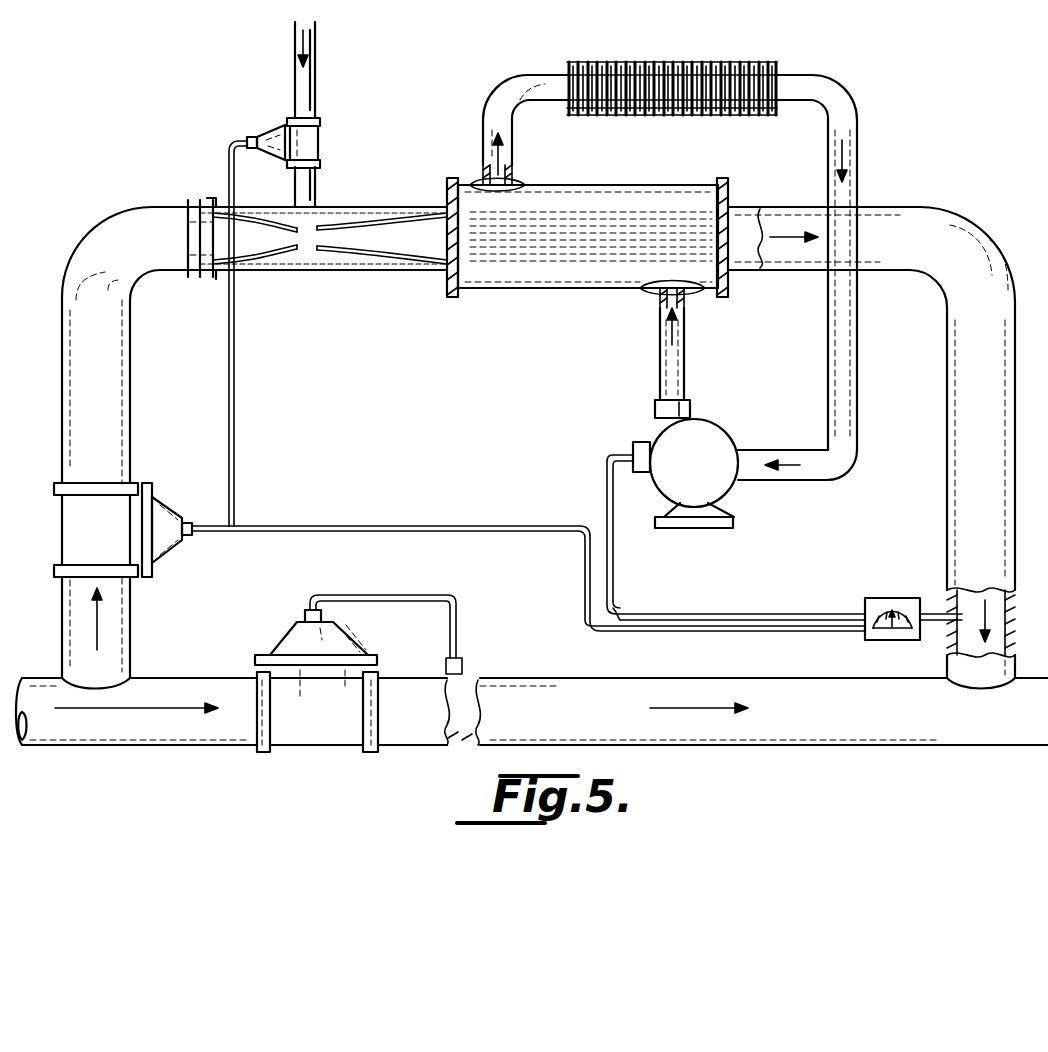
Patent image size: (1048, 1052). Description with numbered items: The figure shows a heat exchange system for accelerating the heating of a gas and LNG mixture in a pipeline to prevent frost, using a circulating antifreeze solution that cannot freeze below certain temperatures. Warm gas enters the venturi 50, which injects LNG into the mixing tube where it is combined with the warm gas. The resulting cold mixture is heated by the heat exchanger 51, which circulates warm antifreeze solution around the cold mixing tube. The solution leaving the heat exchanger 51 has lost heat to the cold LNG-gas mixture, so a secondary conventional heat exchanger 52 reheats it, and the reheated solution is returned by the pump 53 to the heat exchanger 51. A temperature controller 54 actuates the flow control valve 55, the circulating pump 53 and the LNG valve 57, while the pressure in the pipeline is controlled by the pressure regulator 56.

The venturi 50 is at (300, 240).
The heat exchanger 51 is at (588, 186).
The secondary conventional heat exchanger 52 is at (569, 64).
The pump 53 is at (708, 438).
The temperature controller 54 is at (889, 598).
The flow control valve 55 is at (70, 518).
The pressure regulator 56 is at (297, 655).
The LNG valve 57 is at (272, 130).